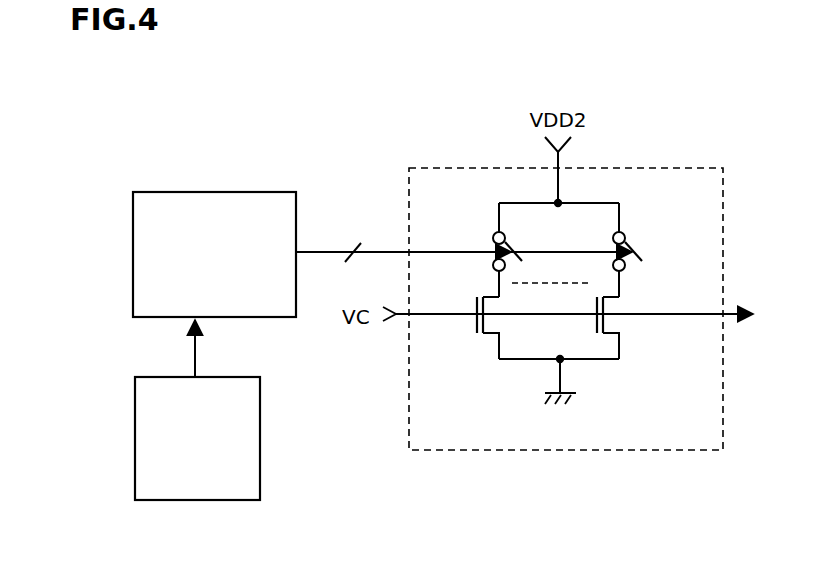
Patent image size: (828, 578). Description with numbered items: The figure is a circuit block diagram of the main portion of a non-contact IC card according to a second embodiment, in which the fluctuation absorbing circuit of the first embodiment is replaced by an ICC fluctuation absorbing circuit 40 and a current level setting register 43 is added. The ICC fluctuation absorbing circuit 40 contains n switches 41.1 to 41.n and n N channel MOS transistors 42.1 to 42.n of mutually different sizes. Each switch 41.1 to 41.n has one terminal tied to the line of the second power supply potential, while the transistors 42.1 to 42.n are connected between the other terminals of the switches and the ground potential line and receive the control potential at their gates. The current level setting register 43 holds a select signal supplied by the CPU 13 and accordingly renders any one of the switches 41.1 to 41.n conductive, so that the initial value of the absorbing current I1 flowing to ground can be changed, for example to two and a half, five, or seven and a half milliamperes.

The CPU 13 is at (135, 440).
The current level setting register 43 is at (133, 255).
The ICC fluctuation absorbing circuit 40 is at (407, 164).
The switch 41.1 is at (516, 242).
The switch 41.n is at (641, 242).
The N channel MOS transistor 42.1 is at (490, 338).
The N channel MOS transistor 42.n is at (612, 323).
The absorbing current I1 is at (562, 381).